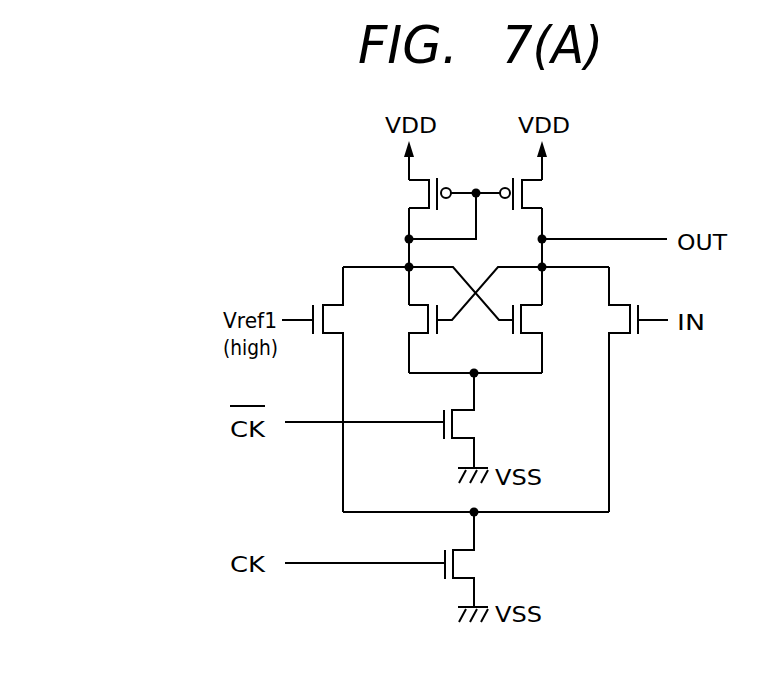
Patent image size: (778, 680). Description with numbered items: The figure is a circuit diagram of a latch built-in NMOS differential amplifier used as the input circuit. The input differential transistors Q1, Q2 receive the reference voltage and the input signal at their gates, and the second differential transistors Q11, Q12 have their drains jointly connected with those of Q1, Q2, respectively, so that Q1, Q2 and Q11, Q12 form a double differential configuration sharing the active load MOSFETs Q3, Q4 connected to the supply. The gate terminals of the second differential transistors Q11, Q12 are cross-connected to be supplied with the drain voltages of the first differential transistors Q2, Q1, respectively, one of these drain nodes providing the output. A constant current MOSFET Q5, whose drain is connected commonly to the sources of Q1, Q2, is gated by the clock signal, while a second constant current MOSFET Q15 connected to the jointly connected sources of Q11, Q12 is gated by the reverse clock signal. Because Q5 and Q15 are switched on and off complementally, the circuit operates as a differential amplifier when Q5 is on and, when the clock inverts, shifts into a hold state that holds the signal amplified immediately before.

The input differential transistor Q1 is at (312, 389).
The input differential transistor Q2 is at (638, 389).
The active load MOSFET Q3 is at (426, 194).
The active load MOSFET Q4 is at (525, 194).
The second differential transistor Q11 is at (400, 339).
The second differential transistor Q12 is at (550, 339).
The second constant current MOSFET Q15 is at (405, 420).
The constant current MOSFET Q5 is at (397, 559).